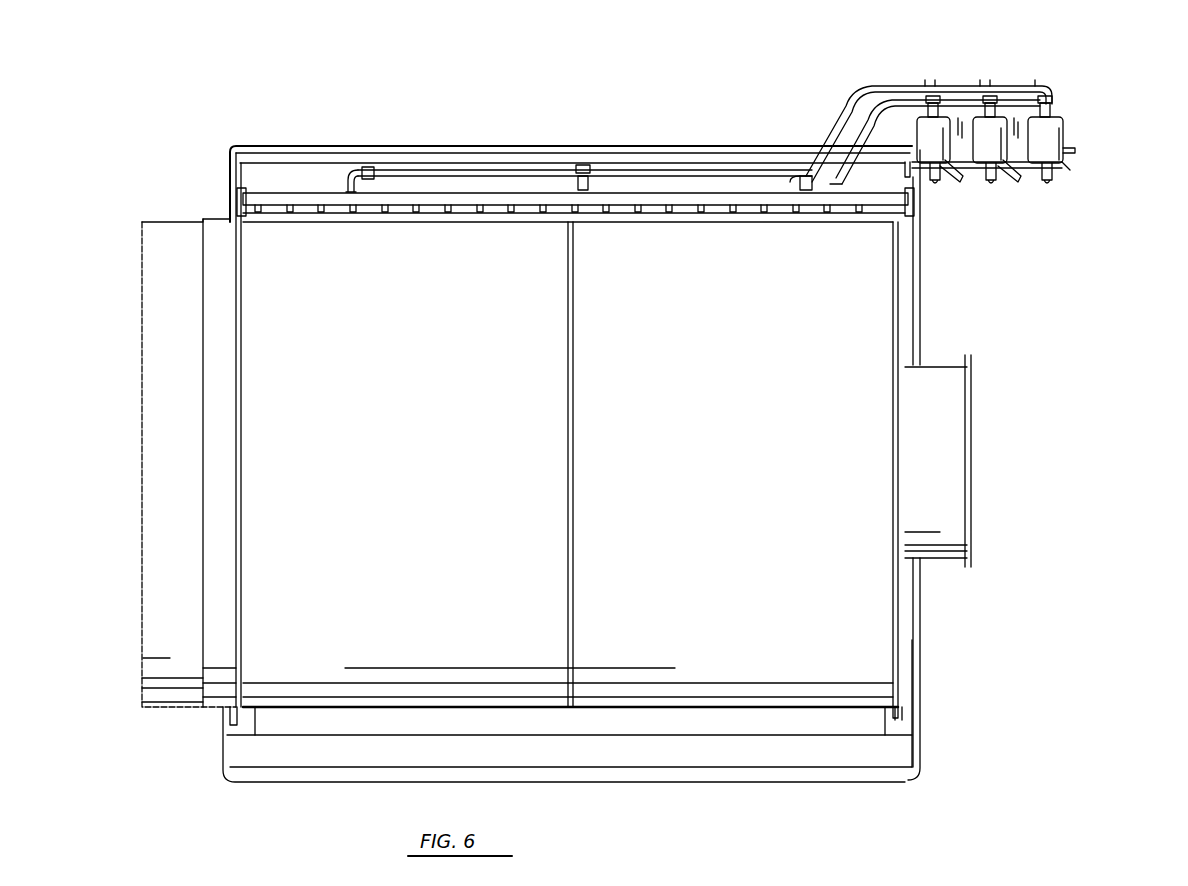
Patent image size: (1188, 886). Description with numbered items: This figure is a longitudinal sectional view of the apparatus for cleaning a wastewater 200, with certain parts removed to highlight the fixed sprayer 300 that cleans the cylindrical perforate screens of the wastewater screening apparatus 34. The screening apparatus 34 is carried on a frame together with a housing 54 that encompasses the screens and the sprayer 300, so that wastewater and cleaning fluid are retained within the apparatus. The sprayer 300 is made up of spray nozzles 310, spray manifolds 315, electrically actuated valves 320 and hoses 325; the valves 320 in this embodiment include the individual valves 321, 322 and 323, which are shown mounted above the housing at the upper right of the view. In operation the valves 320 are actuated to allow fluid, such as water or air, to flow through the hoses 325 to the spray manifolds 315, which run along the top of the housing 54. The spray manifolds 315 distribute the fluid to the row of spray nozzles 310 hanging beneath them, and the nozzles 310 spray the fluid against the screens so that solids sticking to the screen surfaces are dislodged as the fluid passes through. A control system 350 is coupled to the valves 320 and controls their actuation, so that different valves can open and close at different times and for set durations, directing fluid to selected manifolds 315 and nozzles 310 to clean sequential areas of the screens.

The apparatus for cleaning a wastewater 200 is at (1005, 693).
The wastewater screening apparatus 34 is at (890, 303).
The housing 54 is at (848, 758).
The sprayer 300 is at (1074, 80).
The spray nozzles 310 is at (470, 218).
The spray manifolds 315 is at (497, 195).
The electrically actuated valves 320 is at (1074, 132).
The valve 321 is at (940, 150).
The valve 322 is at (998, 152).
The valve 323 is at (1052, 148).
The hoses 325 is at (847, 124).
The control system 350 is at (1013, 104).